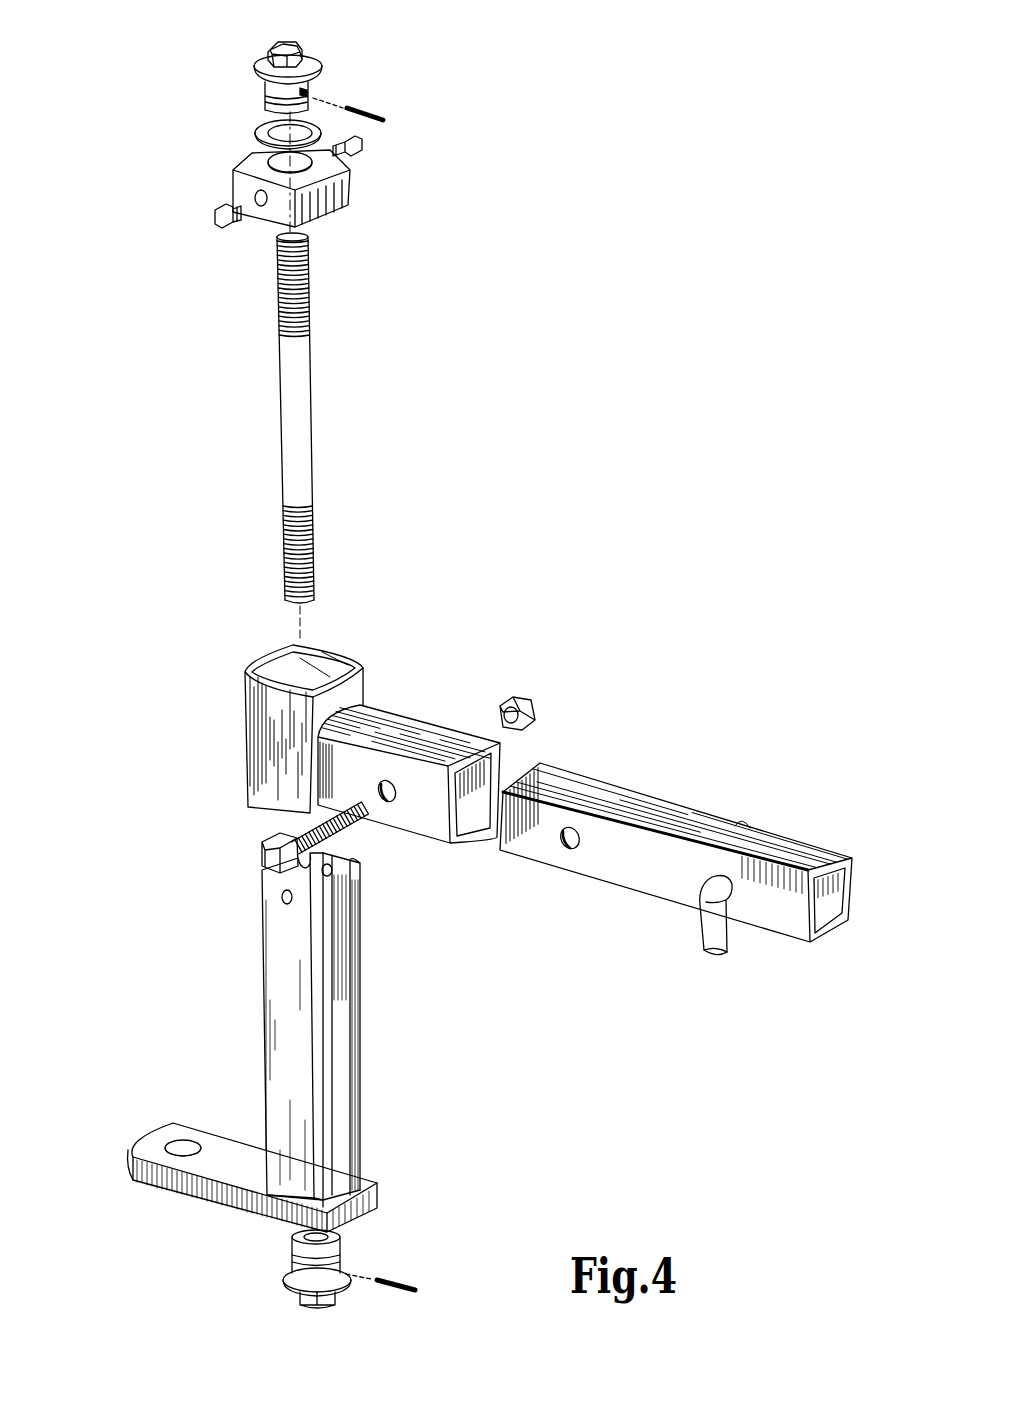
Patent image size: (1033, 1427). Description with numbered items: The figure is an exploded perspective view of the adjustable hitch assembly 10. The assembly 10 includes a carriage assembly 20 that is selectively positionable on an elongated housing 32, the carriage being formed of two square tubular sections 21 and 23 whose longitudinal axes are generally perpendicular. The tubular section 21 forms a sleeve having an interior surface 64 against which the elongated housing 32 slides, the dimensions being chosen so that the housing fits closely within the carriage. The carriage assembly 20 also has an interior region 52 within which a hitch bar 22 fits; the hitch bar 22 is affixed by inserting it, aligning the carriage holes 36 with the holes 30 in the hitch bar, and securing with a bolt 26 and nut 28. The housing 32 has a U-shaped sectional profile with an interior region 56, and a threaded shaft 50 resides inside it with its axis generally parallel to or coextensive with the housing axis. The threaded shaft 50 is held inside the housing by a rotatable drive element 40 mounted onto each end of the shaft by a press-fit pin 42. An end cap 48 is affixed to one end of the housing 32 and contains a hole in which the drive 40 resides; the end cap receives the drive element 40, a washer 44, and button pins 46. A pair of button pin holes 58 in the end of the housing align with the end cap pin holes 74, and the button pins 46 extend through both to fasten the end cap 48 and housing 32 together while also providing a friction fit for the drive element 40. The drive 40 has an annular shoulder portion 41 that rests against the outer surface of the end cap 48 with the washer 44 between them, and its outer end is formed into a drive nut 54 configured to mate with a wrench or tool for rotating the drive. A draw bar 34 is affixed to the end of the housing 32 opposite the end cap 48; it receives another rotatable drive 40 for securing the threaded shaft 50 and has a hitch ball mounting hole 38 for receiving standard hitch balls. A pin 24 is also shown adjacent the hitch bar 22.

The adjustable hitch assembly 10 is at (525, 457).
The carriage assembly 20 is at (430, 645).
The tubular section 21 is at (272, 713).
The hitch bar 22 is at (627, 808).
The tubular section 23 is at (431, 810).
The locking pin 24 is at (697, 937).
The bolt 26 is at (345, 835).
The nut 28 is at (528, 695).
The holes 30 is at (562, 850).
The elongated housing 32 is at (285, 970).
The draw bar 34 is at (217, 1142).
The carriage holes 36 is at (378, 780).
The hitch ball mounting hole 38 is at (175, 1142).
The rotatable drive element 40 is at (308, 80).
The annular shoulder portion 41 is at (265, 53).
The press-fit pin 42 is at (375, 110).
The washer 44 is at (258, 127).
The button pins 46 is at (362, 146).
The end cap 48 is at (348, 183).
The threaded shaft 50 is at (300, 360).
The interior region 52 is at (497, 762).
The drive nut 54 is at (303, 43).
The interior region 56 is at (345, 965).
The button pin holes 58 is at (283, 895).
The interior surface 64 is at (323, 672).
The end cap pin holes 74 is at (255, 194).